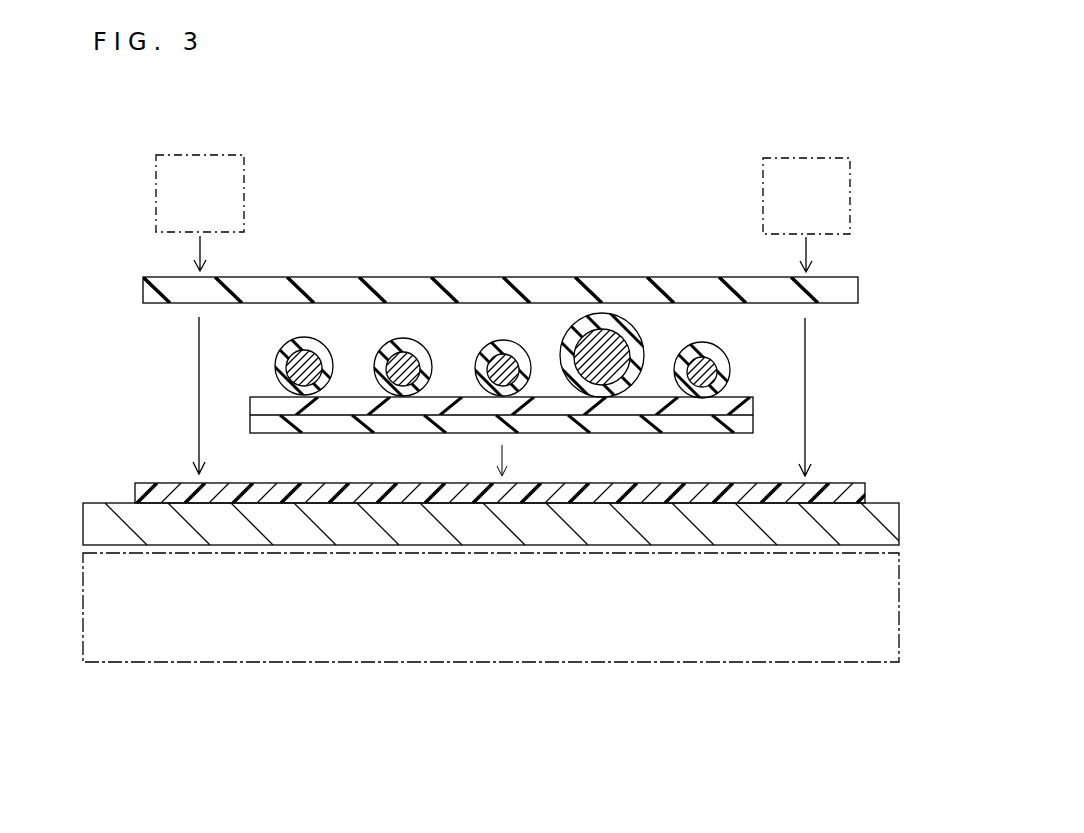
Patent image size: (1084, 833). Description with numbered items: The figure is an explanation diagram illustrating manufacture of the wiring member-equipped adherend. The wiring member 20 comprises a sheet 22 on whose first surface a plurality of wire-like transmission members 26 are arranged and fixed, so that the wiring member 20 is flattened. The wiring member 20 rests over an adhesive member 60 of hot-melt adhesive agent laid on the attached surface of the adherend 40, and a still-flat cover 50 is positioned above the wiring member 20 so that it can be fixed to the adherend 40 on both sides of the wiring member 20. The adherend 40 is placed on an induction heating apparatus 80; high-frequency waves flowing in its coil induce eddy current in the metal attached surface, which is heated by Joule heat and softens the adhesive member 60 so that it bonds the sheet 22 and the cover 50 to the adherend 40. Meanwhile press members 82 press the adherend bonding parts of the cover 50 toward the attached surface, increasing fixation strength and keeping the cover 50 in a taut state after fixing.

The wiring member 20 is at (250, 352).
The sheet 22 is at (613, 433).
The wire-like transmission member 26 is at (481, 352).
The adherend 40 is at (880, 518).
The cover 50 is at (485, 276).
The adhesive member 60 is at (420, 483).
The induction heating apparatus 80 is at (474, 662).
The press member 82 is at (203, 153).